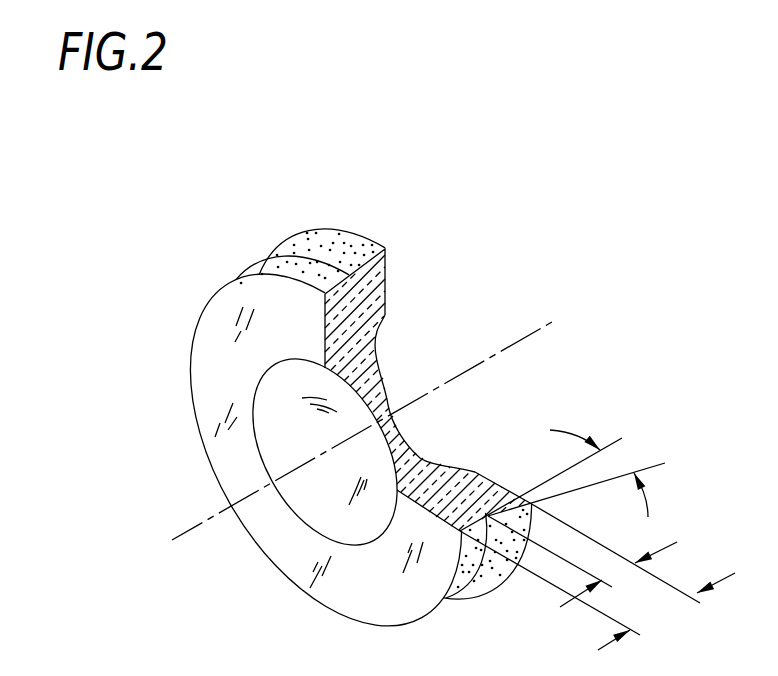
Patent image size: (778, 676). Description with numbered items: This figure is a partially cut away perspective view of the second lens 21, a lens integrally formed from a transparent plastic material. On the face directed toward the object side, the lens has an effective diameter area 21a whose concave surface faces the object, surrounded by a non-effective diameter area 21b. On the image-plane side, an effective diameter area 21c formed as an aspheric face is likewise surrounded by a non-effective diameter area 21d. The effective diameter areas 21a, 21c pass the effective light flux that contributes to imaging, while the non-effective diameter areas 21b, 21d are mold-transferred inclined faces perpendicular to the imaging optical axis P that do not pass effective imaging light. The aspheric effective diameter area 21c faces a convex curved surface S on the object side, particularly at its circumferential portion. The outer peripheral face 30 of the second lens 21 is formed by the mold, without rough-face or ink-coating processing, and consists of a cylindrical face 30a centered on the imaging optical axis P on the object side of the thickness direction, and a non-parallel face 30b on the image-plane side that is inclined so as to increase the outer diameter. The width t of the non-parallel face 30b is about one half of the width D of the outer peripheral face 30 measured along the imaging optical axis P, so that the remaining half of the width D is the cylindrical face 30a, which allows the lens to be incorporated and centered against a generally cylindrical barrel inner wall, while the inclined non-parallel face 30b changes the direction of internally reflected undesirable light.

The second lens 21 is at (200, 320).
The effective diameter area 21a is at (270, 438).
The non-effective diameter area 21b is at (200, 375).
The effective diameter area 21c is at (410, 450).
The non-effective diameter area 21d is at (497, 500).
The outer peripheral face 30 is at (385, 392).
The cylindrical face 30a is at (303, 268).
The non-parallel face 30b is at (363, 248).
The convex curved surface S is at (380, 333).
The imaging optical axis P is at (178, 542).
The width of the non-parallel face t is at (611, 555).
The width of the outer peripheral face D is at (566, 590).